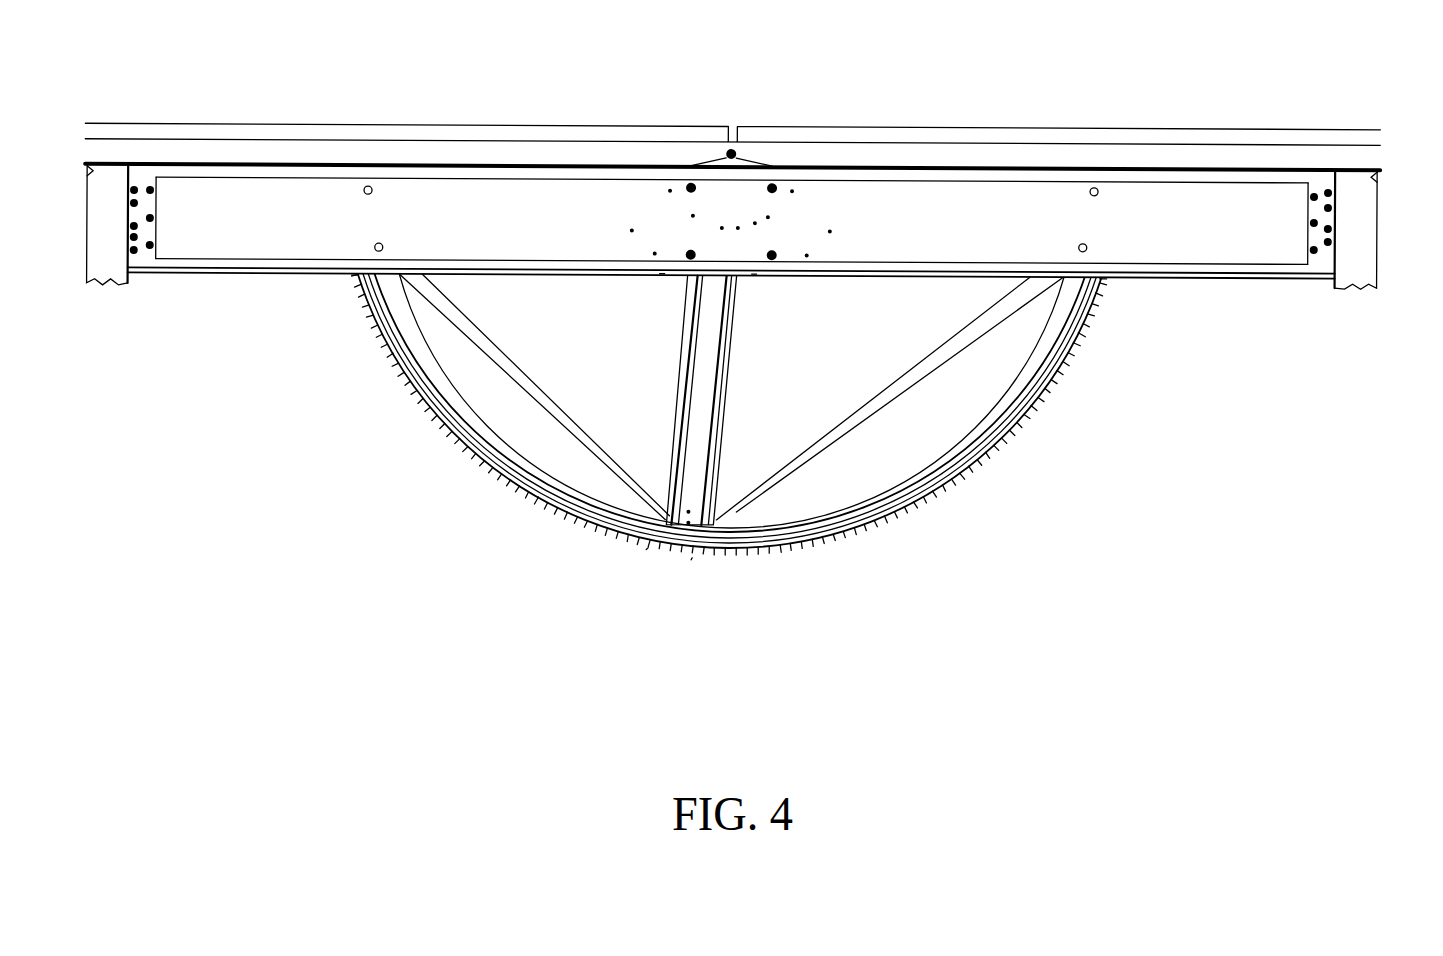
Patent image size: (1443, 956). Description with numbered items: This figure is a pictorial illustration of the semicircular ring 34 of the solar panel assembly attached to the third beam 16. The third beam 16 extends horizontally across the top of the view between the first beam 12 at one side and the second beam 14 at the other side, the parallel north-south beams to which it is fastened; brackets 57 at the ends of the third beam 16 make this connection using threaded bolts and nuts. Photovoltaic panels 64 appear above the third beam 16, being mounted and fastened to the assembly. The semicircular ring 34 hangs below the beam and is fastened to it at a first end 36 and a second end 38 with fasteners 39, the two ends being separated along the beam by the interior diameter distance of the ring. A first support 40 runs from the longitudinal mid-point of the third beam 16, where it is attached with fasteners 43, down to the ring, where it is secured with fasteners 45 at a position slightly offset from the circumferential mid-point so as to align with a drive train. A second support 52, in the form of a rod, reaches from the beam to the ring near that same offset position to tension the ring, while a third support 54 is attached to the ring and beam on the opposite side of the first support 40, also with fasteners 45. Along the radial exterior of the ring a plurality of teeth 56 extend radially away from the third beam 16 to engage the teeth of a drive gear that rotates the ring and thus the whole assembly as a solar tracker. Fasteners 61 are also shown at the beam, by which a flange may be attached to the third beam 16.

The first beam 12 is at (110, 290).
The second beam 14 is at (1378, 282).
The third beam 16 is at (1247, 247).
The semicircular ring 34 is at (1097, 333).
The first end of the semicircular ring 36 is at (355, 283).
The second end of the semicircular ring 38 is at (1110, 277).
The fasteners 39 is at (368, 187).
The first support 40 is at (723, 367).
The fasteners 43 is at (667, 274).
The fasteners 45 is at (693, 560).
The second support 52 is at (565, 410).
The third support 54 is at (830, 427).
The teeth 56 is at (723, 558).
The brackets 57 is at (142, 268).
The fasteners 61 is at (690, 183).
The photovoltaic panels 64 is at (641, 141).